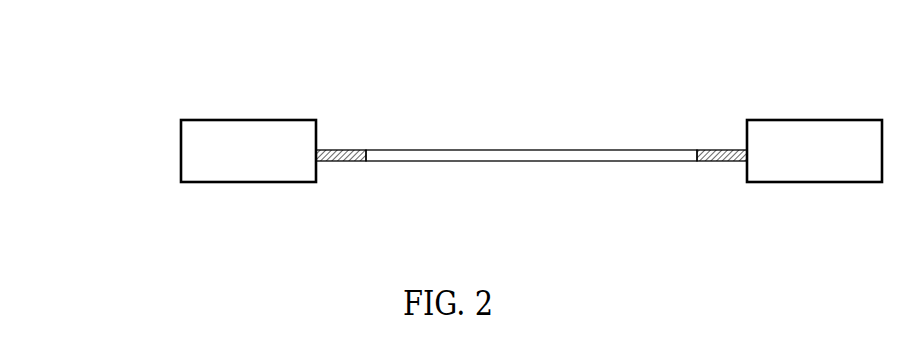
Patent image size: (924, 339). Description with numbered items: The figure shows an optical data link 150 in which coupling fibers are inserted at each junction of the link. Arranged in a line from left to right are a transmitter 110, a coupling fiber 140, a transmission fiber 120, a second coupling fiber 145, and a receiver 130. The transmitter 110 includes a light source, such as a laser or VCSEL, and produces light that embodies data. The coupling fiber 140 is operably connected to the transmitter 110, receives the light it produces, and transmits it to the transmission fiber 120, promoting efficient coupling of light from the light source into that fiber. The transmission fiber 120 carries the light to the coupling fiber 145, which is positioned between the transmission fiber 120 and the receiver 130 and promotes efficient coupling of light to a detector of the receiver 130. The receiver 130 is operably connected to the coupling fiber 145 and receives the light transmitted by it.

The optical data link 150 is at (145, 93).
The transmitter 110 is at (251, 140).
The transmission fiber 120 is at (518, 149).
The receiver 130 is at (793, 130).
The coupling fiber 140 is at (343, 162).
The coupling fiber 145 is at (702, 162).